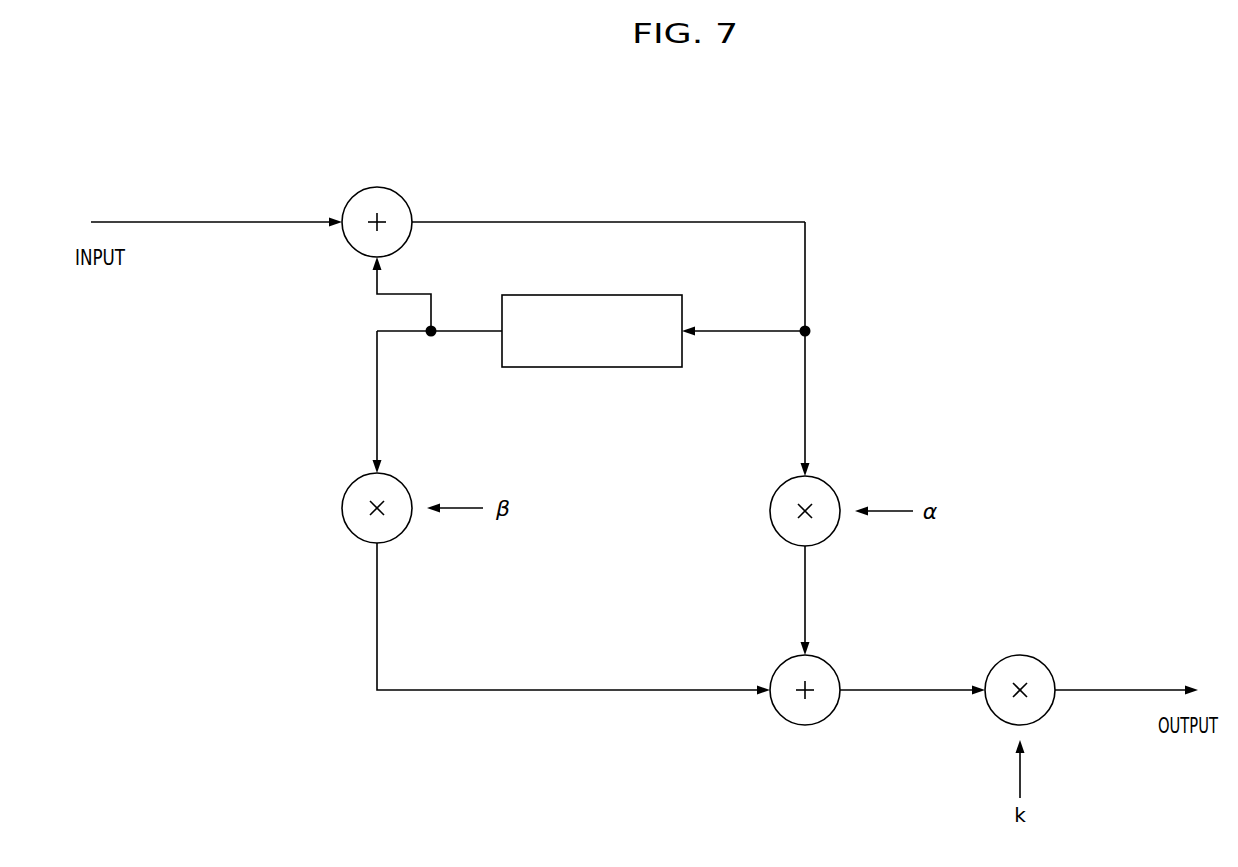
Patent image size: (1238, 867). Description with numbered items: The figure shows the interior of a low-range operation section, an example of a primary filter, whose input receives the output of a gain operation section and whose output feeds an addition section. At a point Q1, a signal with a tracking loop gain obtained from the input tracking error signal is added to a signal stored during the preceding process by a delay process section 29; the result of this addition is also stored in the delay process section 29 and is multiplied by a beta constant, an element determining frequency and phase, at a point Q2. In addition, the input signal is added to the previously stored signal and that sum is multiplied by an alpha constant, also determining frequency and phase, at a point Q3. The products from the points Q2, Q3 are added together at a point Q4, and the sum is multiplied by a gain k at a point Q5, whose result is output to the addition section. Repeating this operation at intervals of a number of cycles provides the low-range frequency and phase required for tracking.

The point Q1 is at (407, 198).
The point Q2 is at (412, 480).
The point Q3 is at (837, 497).
The point Q4 is at (783, 717).
The point Q5 is at (1053, 670).
The "Z–1" process section 29 is at (608, 367).